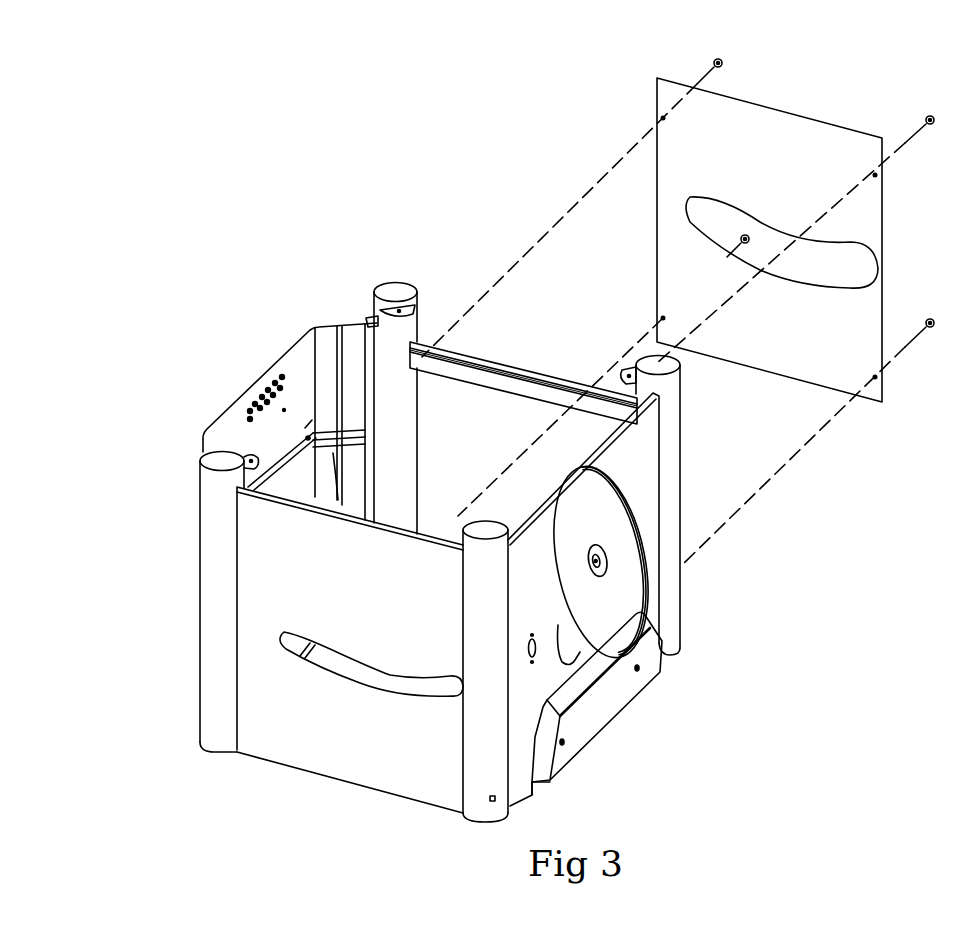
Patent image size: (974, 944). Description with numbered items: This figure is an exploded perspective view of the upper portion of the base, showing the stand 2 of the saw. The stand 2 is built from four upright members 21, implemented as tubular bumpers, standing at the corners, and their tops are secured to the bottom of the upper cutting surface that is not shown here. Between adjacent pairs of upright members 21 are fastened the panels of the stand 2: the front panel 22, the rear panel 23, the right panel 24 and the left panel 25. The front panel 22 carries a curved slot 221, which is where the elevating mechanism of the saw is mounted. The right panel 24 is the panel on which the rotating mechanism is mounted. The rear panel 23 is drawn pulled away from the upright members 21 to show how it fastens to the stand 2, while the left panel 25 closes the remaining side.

The stand 2 is at (193, 305).
The upright members 21 is at (393, 353).
The front panel 22 is at (293, 607).
The curved slot 221 is at (300, 656).
The rear panel 23 is at (762, 137).
The right panel 24 is at (600, 612).
The left panel 25 is at (228, 428).